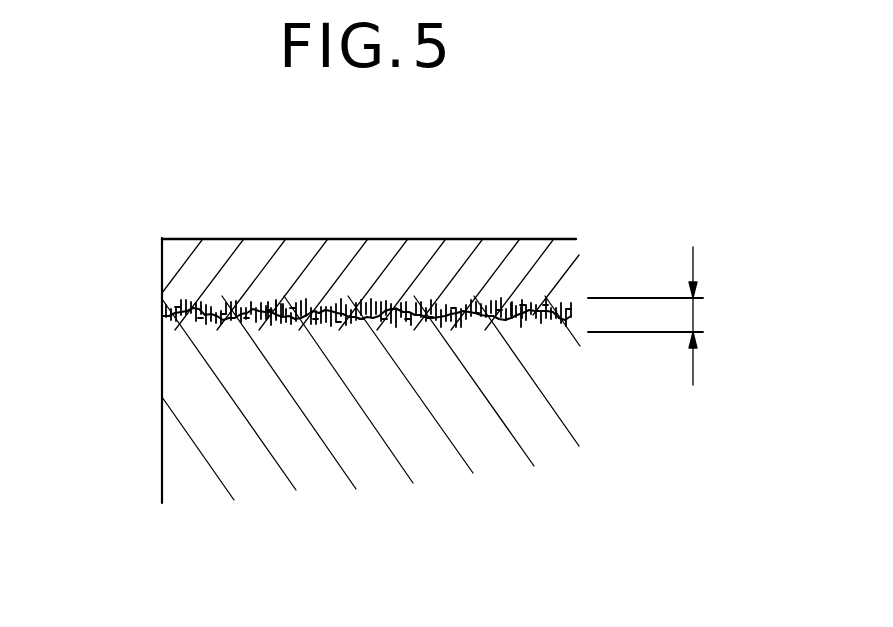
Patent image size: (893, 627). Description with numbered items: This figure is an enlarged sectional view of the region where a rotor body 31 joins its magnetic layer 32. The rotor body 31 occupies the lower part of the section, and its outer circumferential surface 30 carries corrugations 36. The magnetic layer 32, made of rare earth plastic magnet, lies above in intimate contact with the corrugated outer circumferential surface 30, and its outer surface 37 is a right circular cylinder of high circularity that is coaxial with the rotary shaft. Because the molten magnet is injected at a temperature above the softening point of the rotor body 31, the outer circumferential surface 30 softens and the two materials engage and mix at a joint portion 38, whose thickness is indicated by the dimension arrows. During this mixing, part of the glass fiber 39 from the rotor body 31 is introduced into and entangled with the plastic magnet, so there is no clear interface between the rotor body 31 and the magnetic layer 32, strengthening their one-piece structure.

The outer circumferential surface 30 is at (463, 308).
The rotor body 31 is at (162, 425).
The magnetic layer 32 is at (162, 263).
The corrugations 36 is at (519, 302).
The outer surface 37 is at (387, 238).
The joint portion 38 is at (673, 316).
The glass fiber 39 is at (274, 303).